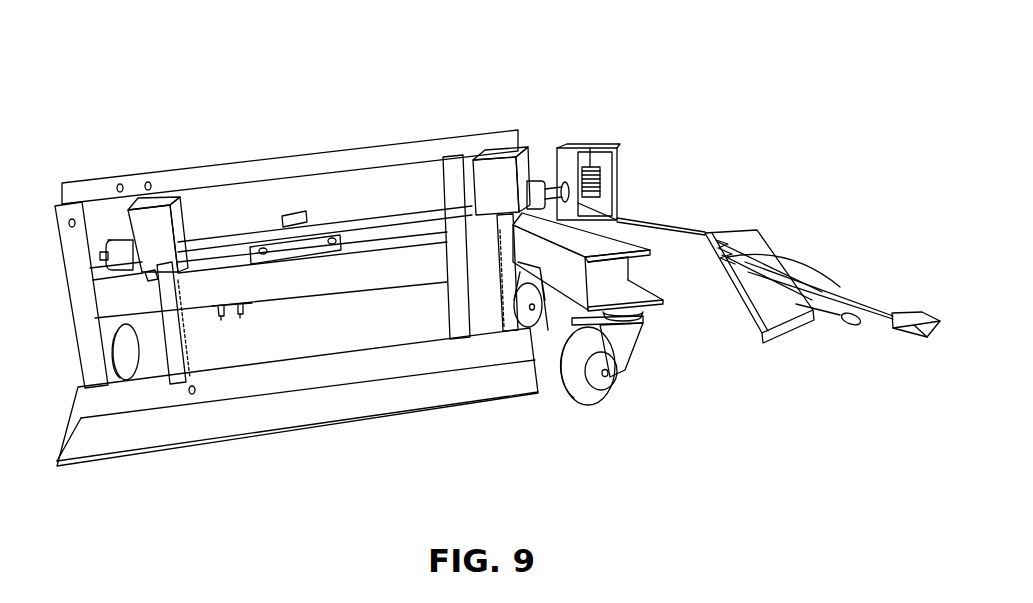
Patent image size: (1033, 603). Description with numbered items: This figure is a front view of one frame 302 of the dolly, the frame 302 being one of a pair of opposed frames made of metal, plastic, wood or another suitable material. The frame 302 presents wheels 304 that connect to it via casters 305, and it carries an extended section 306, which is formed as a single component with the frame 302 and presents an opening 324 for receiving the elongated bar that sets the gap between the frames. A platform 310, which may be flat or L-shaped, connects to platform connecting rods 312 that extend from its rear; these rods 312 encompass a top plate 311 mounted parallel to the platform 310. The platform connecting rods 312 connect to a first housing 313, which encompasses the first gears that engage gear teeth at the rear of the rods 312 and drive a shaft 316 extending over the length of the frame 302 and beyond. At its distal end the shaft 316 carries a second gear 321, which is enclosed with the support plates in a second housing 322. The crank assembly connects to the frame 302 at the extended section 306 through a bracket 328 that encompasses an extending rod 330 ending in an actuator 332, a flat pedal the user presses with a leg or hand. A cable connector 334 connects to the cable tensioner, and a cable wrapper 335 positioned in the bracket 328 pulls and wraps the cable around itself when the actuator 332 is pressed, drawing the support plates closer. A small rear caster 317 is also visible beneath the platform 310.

The frame 302 is at (397, 257).
The wheels 304 is at (575, 400).
The casters 305 is at (613, 350).
The extended section 306 is at (598, 247).
The platform 310 is at (267, 413).
The top plate 311 is at (293, 163).
The platform connecting rods 312 is at (80, 253).
The first housing 313 is at (155, 217).
The shaft 316 is at (382, 214).
The rear caster 317 is at (173, 360).
The second gear 321 is at (592, 148).
The second housing 322 is at (575, 148).
The opening 324 is at (617, 315).
The bracket 328 is at (740, 316).
The extending rod 330 is at (826, 290).
The actuator 332 is at (912, 316).
The cable connector 334 is at (833, 318).
The cable wrapper 335 is at (720, 238).